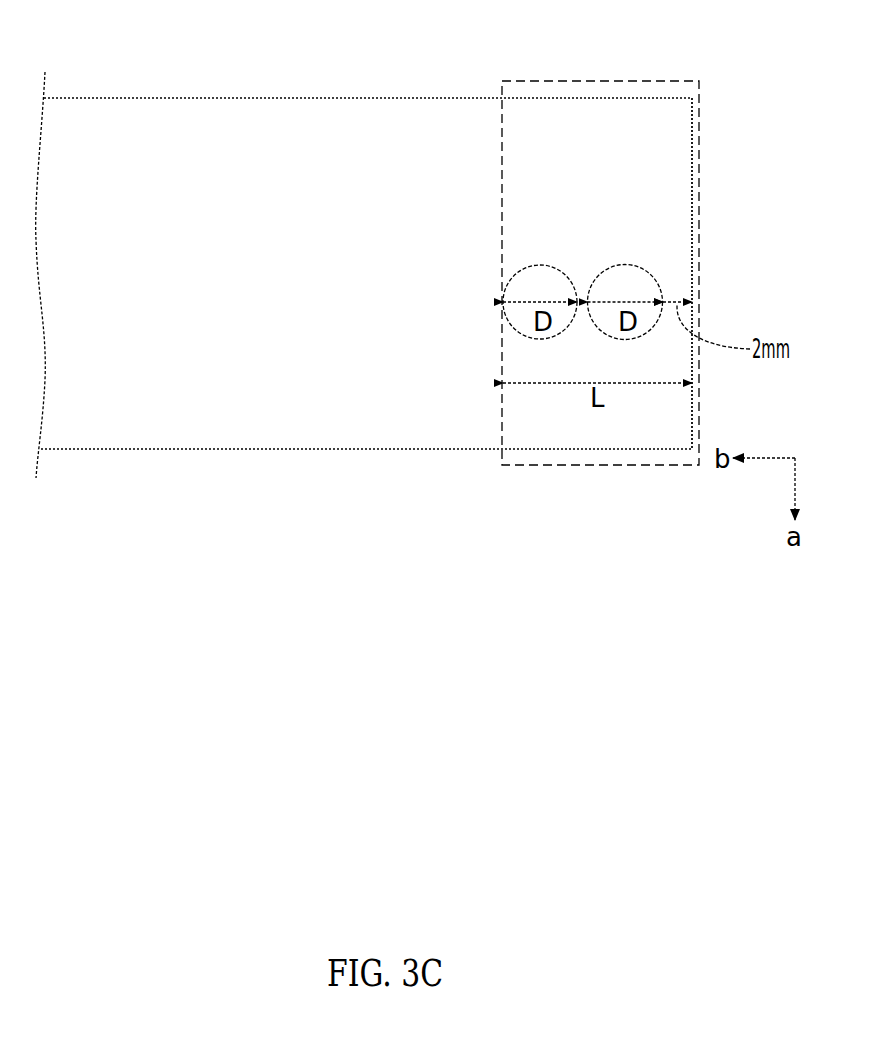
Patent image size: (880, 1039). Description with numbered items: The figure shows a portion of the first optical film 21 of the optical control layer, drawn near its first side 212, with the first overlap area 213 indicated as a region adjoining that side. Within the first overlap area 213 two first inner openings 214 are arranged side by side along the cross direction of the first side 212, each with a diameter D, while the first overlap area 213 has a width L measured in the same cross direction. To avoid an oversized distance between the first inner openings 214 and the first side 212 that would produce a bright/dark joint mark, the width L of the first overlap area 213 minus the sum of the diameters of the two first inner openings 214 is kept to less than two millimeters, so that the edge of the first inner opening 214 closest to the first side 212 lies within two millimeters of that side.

The first optical film 21 is at (138, 97).
The first side 212 is at (695, 161).
The first overlap area 213 is at (622, 80).
The first inner opening 214 is at (551, 263).